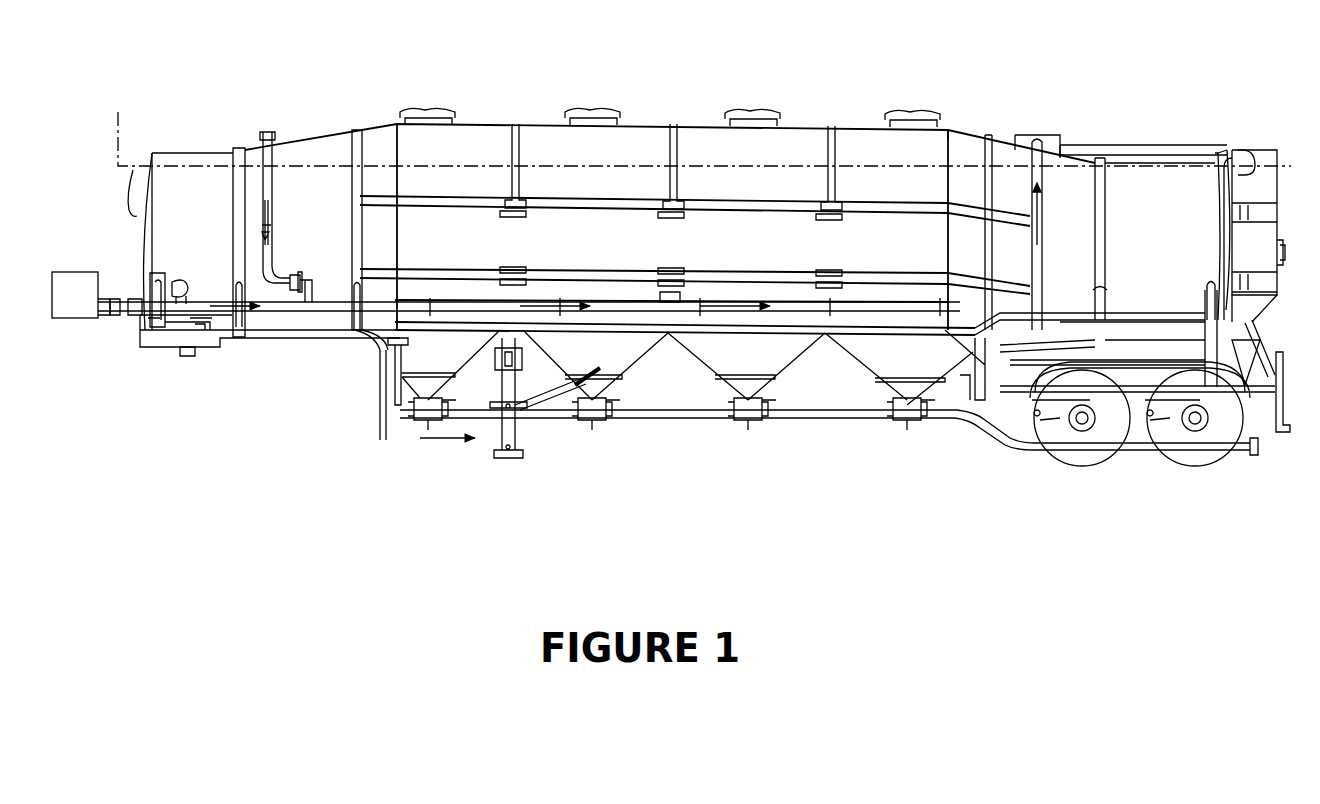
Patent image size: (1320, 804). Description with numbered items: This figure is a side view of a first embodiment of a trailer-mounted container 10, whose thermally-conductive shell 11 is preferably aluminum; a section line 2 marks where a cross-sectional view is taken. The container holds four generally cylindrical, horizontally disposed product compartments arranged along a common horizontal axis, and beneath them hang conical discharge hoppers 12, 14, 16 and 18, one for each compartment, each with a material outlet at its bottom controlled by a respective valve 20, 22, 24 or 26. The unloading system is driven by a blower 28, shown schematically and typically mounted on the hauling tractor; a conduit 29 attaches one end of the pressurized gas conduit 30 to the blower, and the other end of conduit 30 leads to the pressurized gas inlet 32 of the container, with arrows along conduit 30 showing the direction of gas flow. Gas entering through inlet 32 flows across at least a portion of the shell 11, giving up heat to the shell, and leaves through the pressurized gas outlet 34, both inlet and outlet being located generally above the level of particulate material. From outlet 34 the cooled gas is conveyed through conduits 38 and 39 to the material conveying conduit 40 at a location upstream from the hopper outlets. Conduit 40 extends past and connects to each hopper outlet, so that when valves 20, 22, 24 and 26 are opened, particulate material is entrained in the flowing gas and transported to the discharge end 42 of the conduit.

The section line 2- 2 is at (118, 112).
The trailer-mounted container 10 is at (638, 142).
The thermally-conductive shell 11 is at (803, 126).
The conical discharge hopper 12 is at (451, 365).
The conical discharge hopper 14 is at (595, 365).
The conical discharge hopper 16 is at (746, 366).
The conical discharge hopper 18 is at (905, 367).
The valve 20 is at (419, 422).
The valve 22 is at (585, 422).
The valve 24 is at (743, 422).
The valve 26 is at (902, 422).
The blower 28 is at (506, 295).
The conduit 29 is at (113, 320).
The pressurized gas conduit 30 is at (208, 292).
The pressurized gas inlet 32 is at (1049, 124).
The pressurized gas outlet 34 is at (287, 128).
The conduit 38 is at (267, 252).
The conduit 39 is at (396, 400).
The material conveying conduit 40 is at (663, 422).
The discharge end 42 is at (1271, 448).